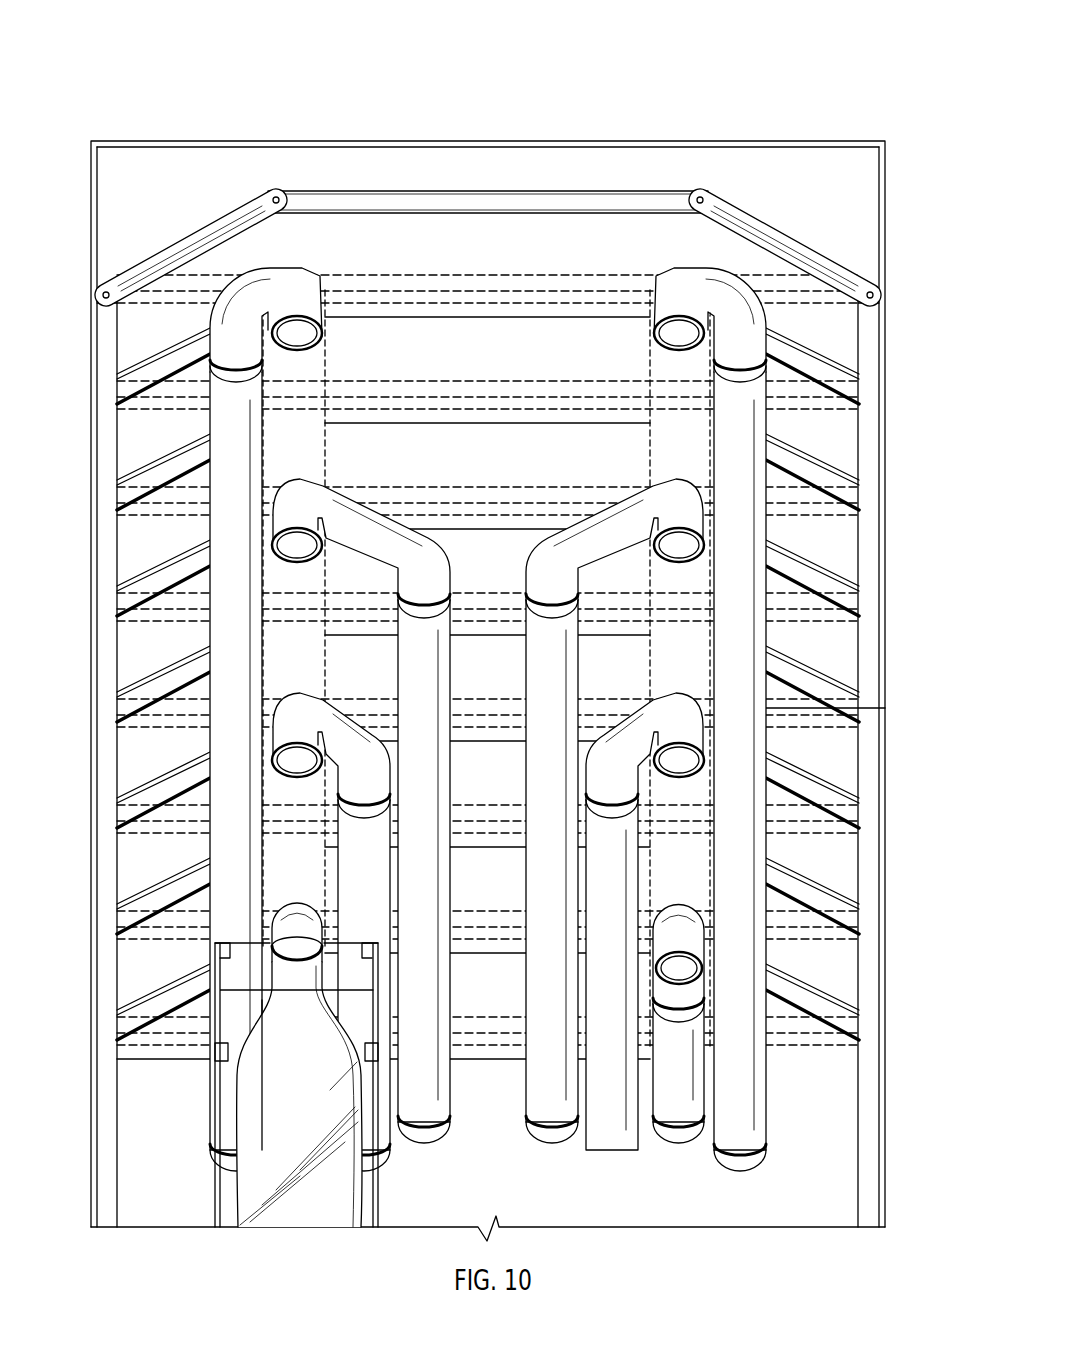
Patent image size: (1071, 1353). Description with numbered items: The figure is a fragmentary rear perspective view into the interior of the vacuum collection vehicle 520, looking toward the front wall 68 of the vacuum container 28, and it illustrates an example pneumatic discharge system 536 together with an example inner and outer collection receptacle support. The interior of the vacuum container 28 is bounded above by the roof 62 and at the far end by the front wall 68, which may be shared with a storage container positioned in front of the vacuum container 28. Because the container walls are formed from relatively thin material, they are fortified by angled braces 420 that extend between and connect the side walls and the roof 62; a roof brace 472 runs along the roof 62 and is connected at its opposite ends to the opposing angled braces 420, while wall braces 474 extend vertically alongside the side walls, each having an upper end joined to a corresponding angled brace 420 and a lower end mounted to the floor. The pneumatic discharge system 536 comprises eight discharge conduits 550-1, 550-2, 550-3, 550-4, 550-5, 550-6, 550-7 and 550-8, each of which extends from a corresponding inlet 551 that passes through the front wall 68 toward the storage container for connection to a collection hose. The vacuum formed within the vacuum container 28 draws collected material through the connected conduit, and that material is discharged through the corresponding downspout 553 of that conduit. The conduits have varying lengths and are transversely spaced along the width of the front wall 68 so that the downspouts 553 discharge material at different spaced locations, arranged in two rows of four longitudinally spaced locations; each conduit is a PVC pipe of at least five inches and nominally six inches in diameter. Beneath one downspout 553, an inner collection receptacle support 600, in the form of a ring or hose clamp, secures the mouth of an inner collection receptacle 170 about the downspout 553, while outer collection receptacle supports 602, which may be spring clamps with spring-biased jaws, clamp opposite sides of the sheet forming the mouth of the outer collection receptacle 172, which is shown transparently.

The vacuum container 28 is at (92, 211).
The roof 62 is at (509, 175).
The front wall 68 is at (640, 1203).
The inner collection receptacle 170 is at (217, 1127).
The outer collection receptacle 172 is at (380, 1113).
The angled braces 420 is at (173, 246).
The roof brace 472 is at (612, 198).
The wall braces 474 is at (103, 353).
The vacuum collection vehicle 520 is at (87, 80).
The pneumatic discharge system 536 is at (200, 421).
The discharge conduit 550-1 is at (283, 903).
The discharge conduit 550-2 is at (283, 700).
The discharge conduit 550-3 is at (283, 497).
The discharge conduit 550-4 is at (288, 277).
The discharge conduit 550-5 is at (693, 930).
The discharge conduit 550-6 is at (683, 718).
The discharge conduit 550-7 is at (690, 500).
The discharge conduit 550-8 is at (755, 325).
The inlet 551 is at (742, 1166).
The downspout 553 is at (322, 338).
The inner collection receptacle support 600 is at (262, 960).
The outer collection receptacle support 602 is at (224, 1062).